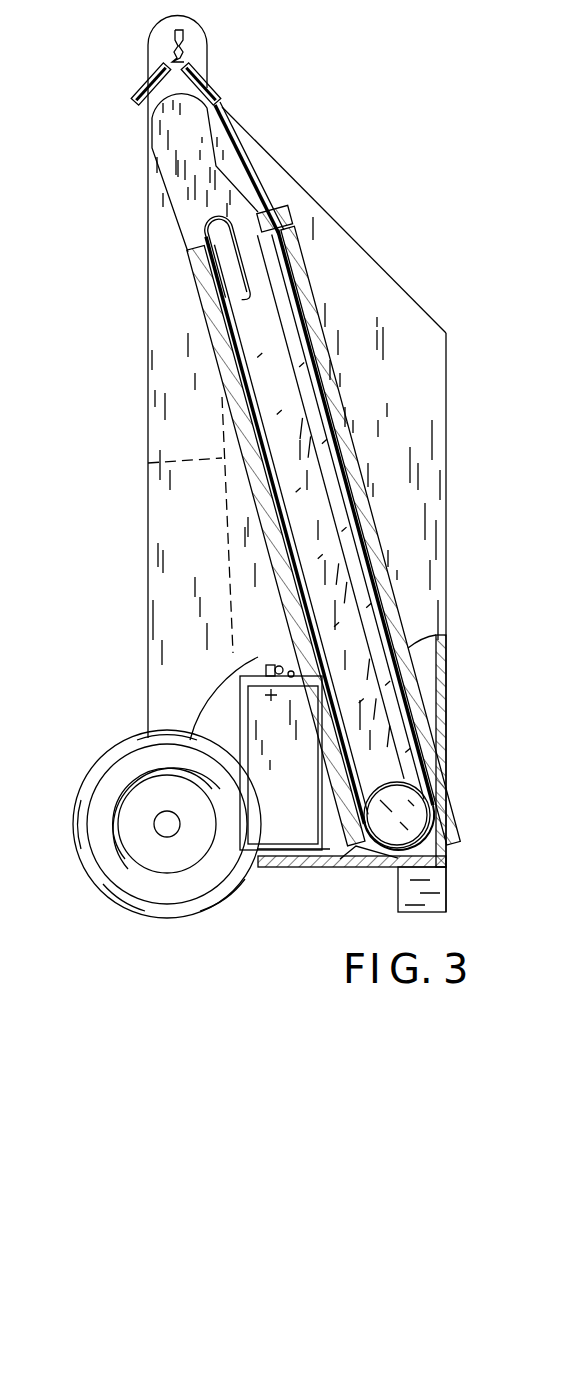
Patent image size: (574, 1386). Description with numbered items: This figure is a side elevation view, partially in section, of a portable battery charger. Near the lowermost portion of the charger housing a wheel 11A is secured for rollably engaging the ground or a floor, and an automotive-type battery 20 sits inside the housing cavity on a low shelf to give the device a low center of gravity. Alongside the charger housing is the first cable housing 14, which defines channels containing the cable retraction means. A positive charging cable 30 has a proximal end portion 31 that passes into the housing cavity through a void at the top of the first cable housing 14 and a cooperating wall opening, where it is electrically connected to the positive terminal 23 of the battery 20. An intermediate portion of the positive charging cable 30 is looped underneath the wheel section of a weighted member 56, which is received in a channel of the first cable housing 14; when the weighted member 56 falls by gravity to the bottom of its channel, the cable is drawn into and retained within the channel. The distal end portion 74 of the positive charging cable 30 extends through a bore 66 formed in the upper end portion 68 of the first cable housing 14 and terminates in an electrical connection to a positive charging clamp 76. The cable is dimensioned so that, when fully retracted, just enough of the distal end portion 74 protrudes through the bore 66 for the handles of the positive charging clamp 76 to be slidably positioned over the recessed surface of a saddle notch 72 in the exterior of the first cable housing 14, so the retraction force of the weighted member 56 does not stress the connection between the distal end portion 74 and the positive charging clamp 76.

The first cable housing 14 is at (300, 272).
The positive charging cable 30 is at (206, 228).
The proximal end portion 31 is at (148, 462).
The bore 66 is at (262, 207).
The upper end portion 68 is at (295, 221).
The saddle notch 72 is at (138, 105).
The distal end portion 74 is at (232, 115).
The positive charging clamp 76 is at (186, 52).
The battery 20 is at (240, 717).
The positive terminal 23 is at (257, 655).
The wheel 11A is at (74, 803).
The weighted member 56 is at (410, 812).